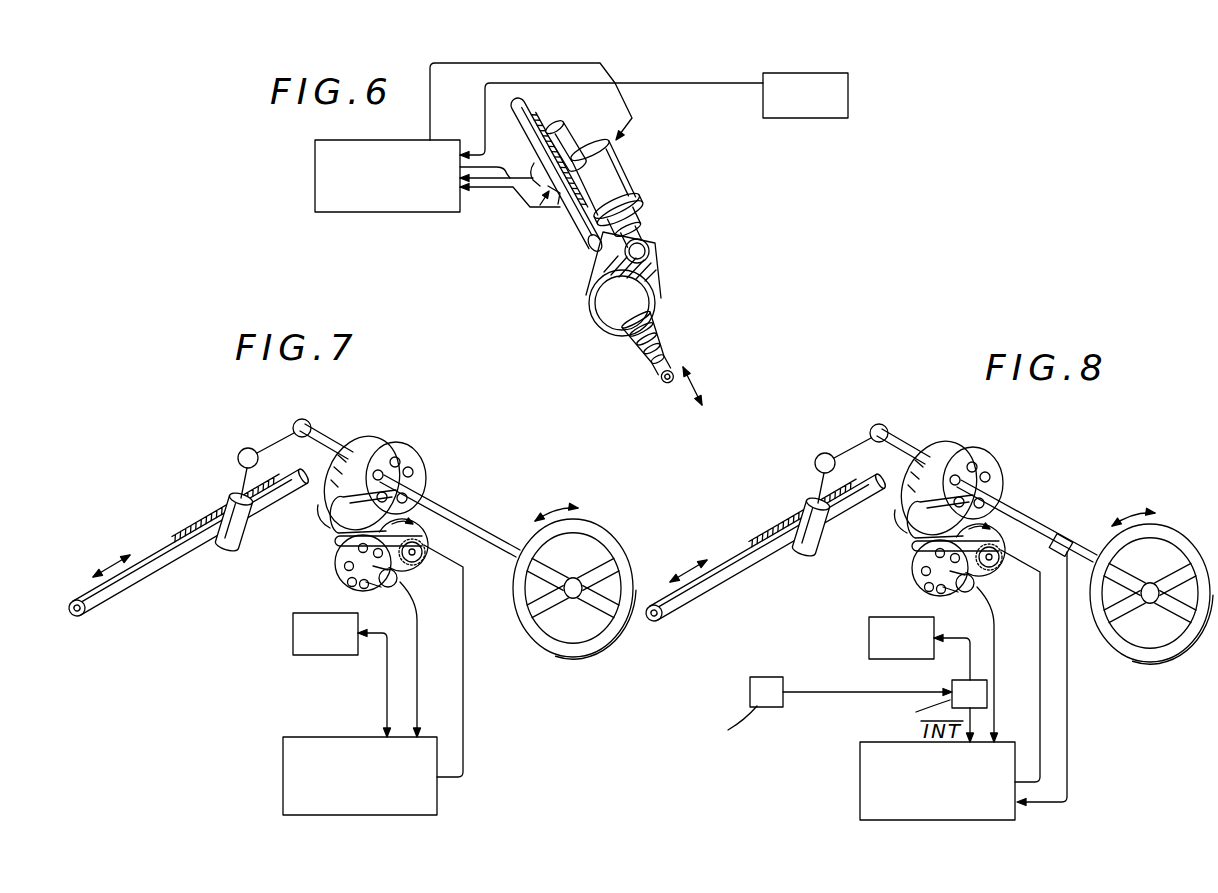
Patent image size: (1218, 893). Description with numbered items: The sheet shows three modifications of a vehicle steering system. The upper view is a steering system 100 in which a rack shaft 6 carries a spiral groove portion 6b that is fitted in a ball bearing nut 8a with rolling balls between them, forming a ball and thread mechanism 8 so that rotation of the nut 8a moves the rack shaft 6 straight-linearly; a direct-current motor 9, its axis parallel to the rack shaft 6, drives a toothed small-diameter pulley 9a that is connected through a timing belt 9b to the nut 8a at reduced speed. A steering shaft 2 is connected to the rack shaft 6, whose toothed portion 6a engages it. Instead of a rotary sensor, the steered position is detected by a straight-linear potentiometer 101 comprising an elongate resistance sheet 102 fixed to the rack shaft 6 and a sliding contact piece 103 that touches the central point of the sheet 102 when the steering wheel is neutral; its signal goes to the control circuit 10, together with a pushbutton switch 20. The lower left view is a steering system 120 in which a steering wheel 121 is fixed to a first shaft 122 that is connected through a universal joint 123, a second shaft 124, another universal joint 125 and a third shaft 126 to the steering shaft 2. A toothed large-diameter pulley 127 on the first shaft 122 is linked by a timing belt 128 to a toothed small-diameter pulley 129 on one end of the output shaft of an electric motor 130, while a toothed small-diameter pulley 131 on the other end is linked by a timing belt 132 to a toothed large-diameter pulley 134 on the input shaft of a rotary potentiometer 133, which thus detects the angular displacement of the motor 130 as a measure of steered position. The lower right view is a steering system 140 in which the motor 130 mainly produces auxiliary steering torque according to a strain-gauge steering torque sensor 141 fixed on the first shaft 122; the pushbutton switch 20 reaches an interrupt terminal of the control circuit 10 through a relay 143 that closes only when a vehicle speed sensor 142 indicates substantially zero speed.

In FIG. 6, the steering shaft 2 is at (575, 140).
In FIG. 7, the steering shaft 2 is at (240, 538).
In FIG. 8, the steering shaft 2 is at (815, 538).
In FIG. 6, the rack shaft 6 is at (579, 267).
In FIG. 7, the rack shaft 6 is at (155, 552).
In FIG. 8, the rack shaft 6 is at (765, 548).
In FIG. 6, the rack teeth 6a is at (533, 114).
In FIG. 7, the rack teeth 6a is at (180, 556).
In FIG. 8, the rack teeth 6a is at (804, 543).
In FIG. 6, the spiral groove portion 6b is at (669, 357).
In FIG. 6, the ball and thread mechanism 8 is at (608, 377).
In FIG. 6, the ball bearing nut 8a is at (651, 301).
In FIG. 6, the direct-current motor 9 is at (630, 167).
In FIG. 6, the toothed small-diameter pulley 9a is at (650, 246).
In FIG. 6, the timing belt 9b is at (588, 292).
In FIG. 6, the control circuit 10 is at (410, 212).
In FIG. 7, the control circuit 10 is at (322, 737).
In FIG. 8, the control circuit 10 is at (860, 790).
In FIG. 6, the pushbutton switch 20 is at (836, 118).
In FIG. 7, the pushbutton switch 20 is at (312, 657).
In FIG. 8, the pushbutton switch 20 is at (868, 636).
In FIG. 6, the steering system 100 is at (779, 226).
In FIG. 6, the straight-linear potentiometer 101 is at (528, 232).
In FIG. 6, the elongate resistance sheet 102 is at (572, 228).
In FIG. 6, the sliding contact piece 103 is at (530, 204).
In FIG. 7, the steering system 120 is at (201, 677).
In FIG. 7, the steering wheel 121 is at (590, 526).
In FIG. 8, the steering wheel 121 is at (1154, 579).
In FIG. 7, the first shaft 122 is at (466, 520).
In FIG. 8, the first shaft 122 is at (1027, 520).
In FIG. 7, the universal joint 123 is at (302, 418).
In FIG. 8, the universal joint 123 is at (884, 413).
In FIG. 7, the second shaft 124 is at (275, 440).
In FIG. 8, the second shaft 124 is at (838, 432).
In FIG. 7, the universal joint 125 is at (238, 453).
In FIG. 8, the universal joint 125 is at (797, 450).
In FIG. 7, the third shaft 126 is at (237, 473).
In FIG. 8, the third shaft 126 is at (784, 488).
In FIG. 7, the toothed large-diameter pulley 127 is at (414, 455).
In FIG. 8, the toothed large-diameter pulley 127 is at (996, 473).
In FIG. 7, the timing belt 128 is at (360, 442).
In FIG. 8, the timing belt 128 is at (933, 468).
In FIG. 7, the toothed small-diameter pulley 129 is at (328, 498).
In FIG. 8, the toothed small-diameter pulley 129 is at (879, 520).
In FIG. 7, the electric motor 130 is at (345, 535).
In FIG. 8, the electric motor 130 is at (918, 534).
In FIG. 7, the toothed small-diameter pulley 131 is at (418, 562).
In FIG. 8, the toothed small-diameter pulley 131 is at (1010, 573).
In FIG. 7, the timing belt 132 is at (410, 583).
In FIG. 8, the timing belt 132 is at (978, 582).
In FIG. 7, the rotary potentiometer 133 is at (376, 590).
In FIG. 8, the rotary potentiometer 133 is at (963, 604).
In FIG. 7, the toothed large-diameter pulley 134 is at (348, 578).
In FIG. 8, the toothed large-diameter pulley 134 is at (922, 578).
In FIG. 8, the steering system 140 is at (1136, 726).
In FIG. 8, the steering torque sensor 141 is at (1071, 538).
In FIG. 8, the vehicle speed sensor 142 is at (765, 677).
In FIG. 8, the relay 143 is at (952, 684).